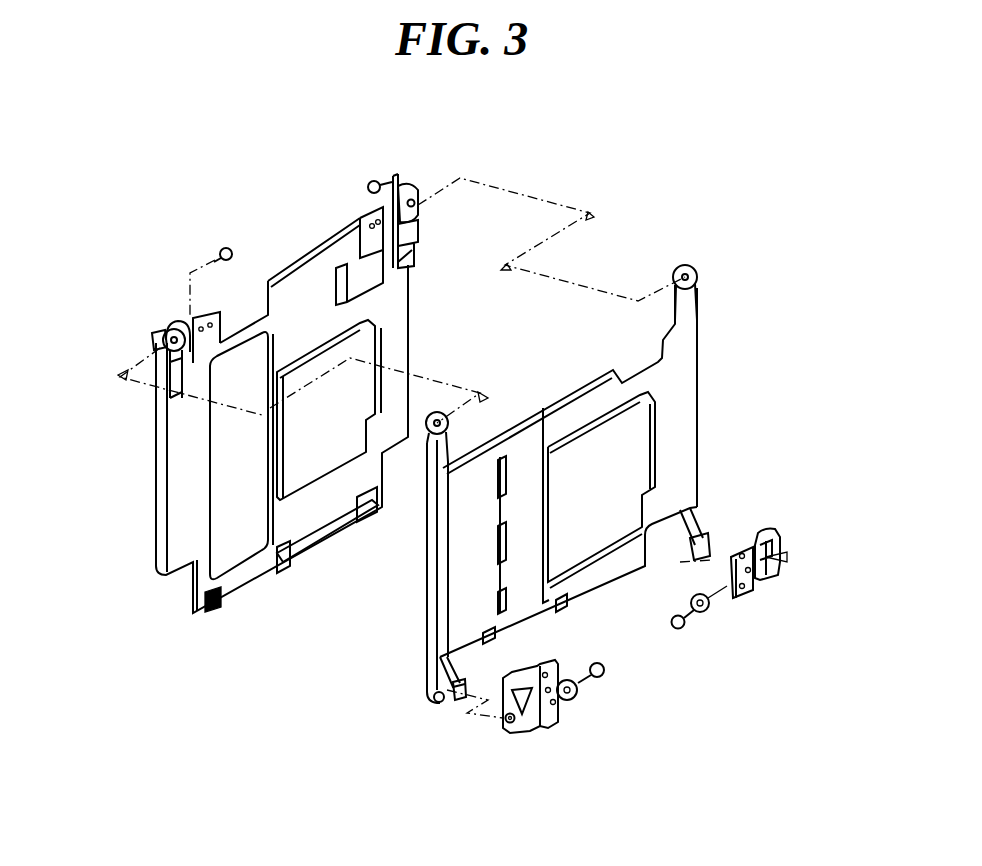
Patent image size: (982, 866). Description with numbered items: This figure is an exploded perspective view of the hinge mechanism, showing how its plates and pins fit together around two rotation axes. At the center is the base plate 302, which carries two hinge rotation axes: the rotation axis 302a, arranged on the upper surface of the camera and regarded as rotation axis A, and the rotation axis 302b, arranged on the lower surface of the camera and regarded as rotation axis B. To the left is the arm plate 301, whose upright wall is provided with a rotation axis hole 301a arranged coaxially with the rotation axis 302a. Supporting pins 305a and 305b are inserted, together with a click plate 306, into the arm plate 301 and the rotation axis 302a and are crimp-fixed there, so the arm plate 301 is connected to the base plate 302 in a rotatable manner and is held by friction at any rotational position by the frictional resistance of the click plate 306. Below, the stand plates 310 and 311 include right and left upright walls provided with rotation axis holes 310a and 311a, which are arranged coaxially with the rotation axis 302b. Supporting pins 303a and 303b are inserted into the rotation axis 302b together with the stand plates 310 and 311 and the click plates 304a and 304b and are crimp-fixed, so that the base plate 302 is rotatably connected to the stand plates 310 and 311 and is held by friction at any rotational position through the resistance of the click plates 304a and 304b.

The arm plate 301 is at (180, 541).
The rotation axis hole 301a is at (410, 186).
The base plate 302 is at (684, 405).
The rotation axis 302a is at (691, 266).
The rotation axis 302b is at (745, 497).
The supporting pin 303a is at (601, 678).
The supporting pin 303b is at (678, 628).
The click plate 304a is at (570, 700).
The click plate 304b is at (710, 612).
The supporting pin 305a is at (220, 252).
The supporting pin 305b is at (370, 184).
The click plate 306 is at (175, 325).
The stand plate 310 is at (546, 735).
The rotation axis hole 310a is at (512, 722).
The stand plate 311 is at (760, 593).
The rotation axis hole 311a is at (787, 570).